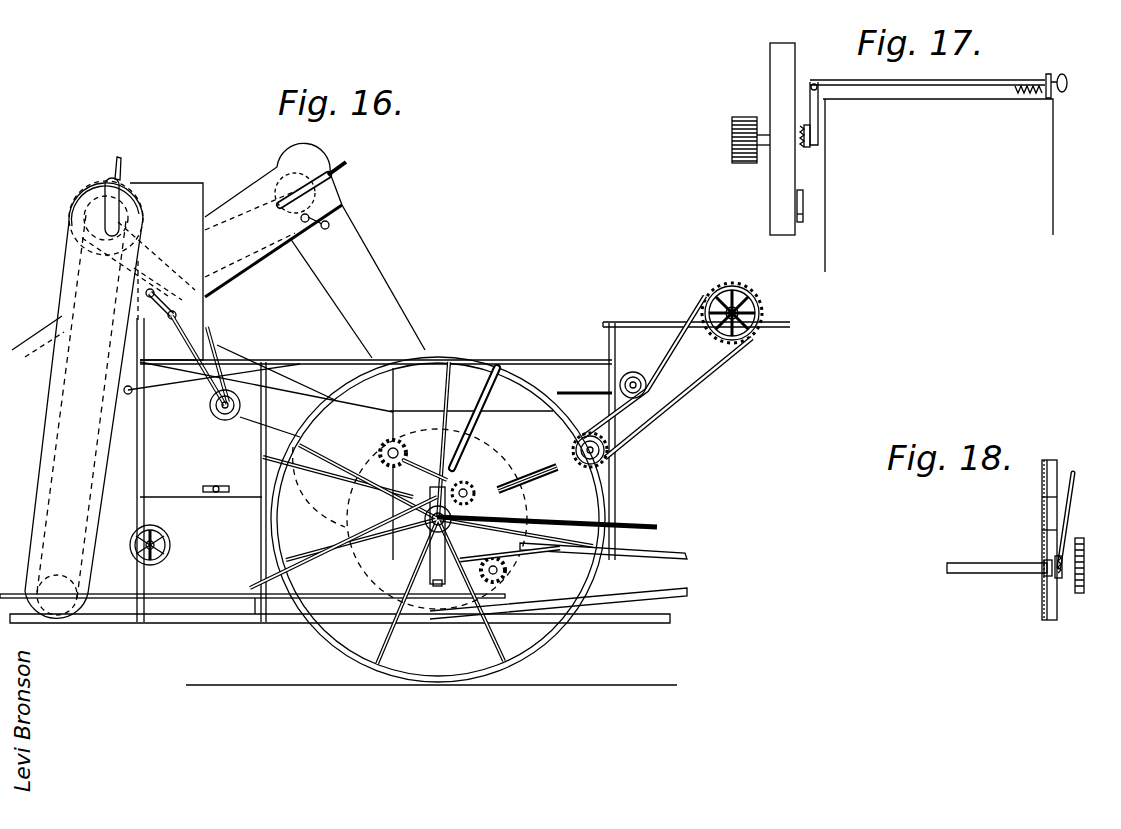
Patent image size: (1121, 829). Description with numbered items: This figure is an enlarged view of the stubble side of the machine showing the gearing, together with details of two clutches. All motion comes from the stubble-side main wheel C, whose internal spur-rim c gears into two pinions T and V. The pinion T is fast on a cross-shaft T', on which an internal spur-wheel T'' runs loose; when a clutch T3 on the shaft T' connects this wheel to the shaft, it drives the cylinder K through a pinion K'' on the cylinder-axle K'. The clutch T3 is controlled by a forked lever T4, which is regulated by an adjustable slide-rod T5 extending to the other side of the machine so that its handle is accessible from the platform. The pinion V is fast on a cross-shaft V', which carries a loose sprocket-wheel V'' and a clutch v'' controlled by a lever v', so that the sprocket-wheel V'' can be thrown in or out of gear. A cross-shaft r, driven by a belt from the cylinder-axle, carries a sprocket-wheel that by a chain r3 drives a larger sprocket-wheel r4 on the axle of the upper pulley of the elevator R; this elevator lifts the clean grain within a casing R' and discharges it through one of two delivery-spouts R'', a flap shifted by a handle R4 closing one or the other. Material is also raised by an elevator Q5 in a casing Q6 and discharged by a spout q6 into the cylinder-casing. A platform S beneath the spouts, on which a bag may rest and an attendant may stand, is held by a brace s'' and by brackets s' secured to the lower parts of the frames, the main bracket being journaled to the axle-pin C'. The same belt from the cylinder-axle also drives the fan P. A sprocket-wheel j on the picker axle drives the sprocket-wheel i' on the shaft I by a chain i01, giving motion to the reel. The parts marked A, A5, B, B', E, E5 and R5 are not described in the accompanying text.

In FIG. 16, the casing R' is at (77, 401).
In FIG. 16, the elevator R is at (116, 398).
In FIG. 16, the sprocket-wheel r4 is at (72, 206).
In FIG. 16, the elevator Q5 is at (238, 262).
In FIG. 16, the casing Q6 is at (275, 220).
In FIG. 16, the spout q6 is at (357, 281).
In FIG. 16, the lever link R5 is at (161, 291).
In FIG. 16, the handle R4 is at (165, 290).
In FIG. 16, the delivery-spouts R'' is at (215, 360).
In FIG. 16, the chain r3 is at (220, 350).
In FIG. 16, the cross-shaft r is at (218, 416).
In FIG. 16, the frame A is at (376, 470).
In FIG. 16, the fan P is at (171, 543).
In FIG. 16, the platform S is at (190, 594).
In FIG. 16, the base bar B is at (343, 649).
In FIG. 18, the base bar B is at (1049, 556).
In FIG. 16, the brackets s' is at (245, 624).
In FIG. 16, the main wheel C is at (438, 504).
In FIG. 16, the axle-pin C' is at (439, 513).
In FIG. 16, the pinion T is at (410, 519).
In FIG. 16, the internal spur-rim c is at (437, 536).
In FIG. 16, the internal spur-wheel T'' is at (403, 440).
In FIG. 17, the internal spur-wheel T'' is at (816, 139).
In FIG. 16, the pinion K'' is at (523, 457).
In FIG. 17, the pinion K'' is at (832, 230).
In FIG. 16, the cylinder K is at (498, 538).
In FIG. 16, the brace s'' is at (343, 542).
In FIG. 16, the rod E5 is at (647, 526).
In FIG. 16, the bar B' is at (613, 544).
In FIG. 16, the board E is at (643, 592).
In FIG. 16, the pinion V is at (510, 571).
In FIG. 16, the cross-shaft V' is at (547, 587).
In FIG. 18, the cross-shaft V' is at (999, 581).
In FIG. 16, the upper rail A5 is at (640, 321).
In FIG. 16, the shaft I is at (757, 300).
In FIG. 16, the sprocket-wheel i' is at (757, 269).
In FIG. 16, the chain i01 is at (684, 405).
In FIG. 16, the sprocket-wheel j is at (610, 458).
In FIG. 17, the cross-shaft T' is at (750, 166).
In FIG. 17, the slide-rod T5 is at (924, 86).
In FIG. 17, the forked lever T4 is at (820, 120).
In FIG. 17, the clutch T3 is at (820, 145).
In FIG. 17, the cylinder-axle K' is at (831, 206).
In FIG. 18, the lever v' is at (1073, 520).
In FIG. 18, the sprocket-wheel V'' is at (1088, 565).
In FIG. 18, the clutch v'' is at (1072, 588).